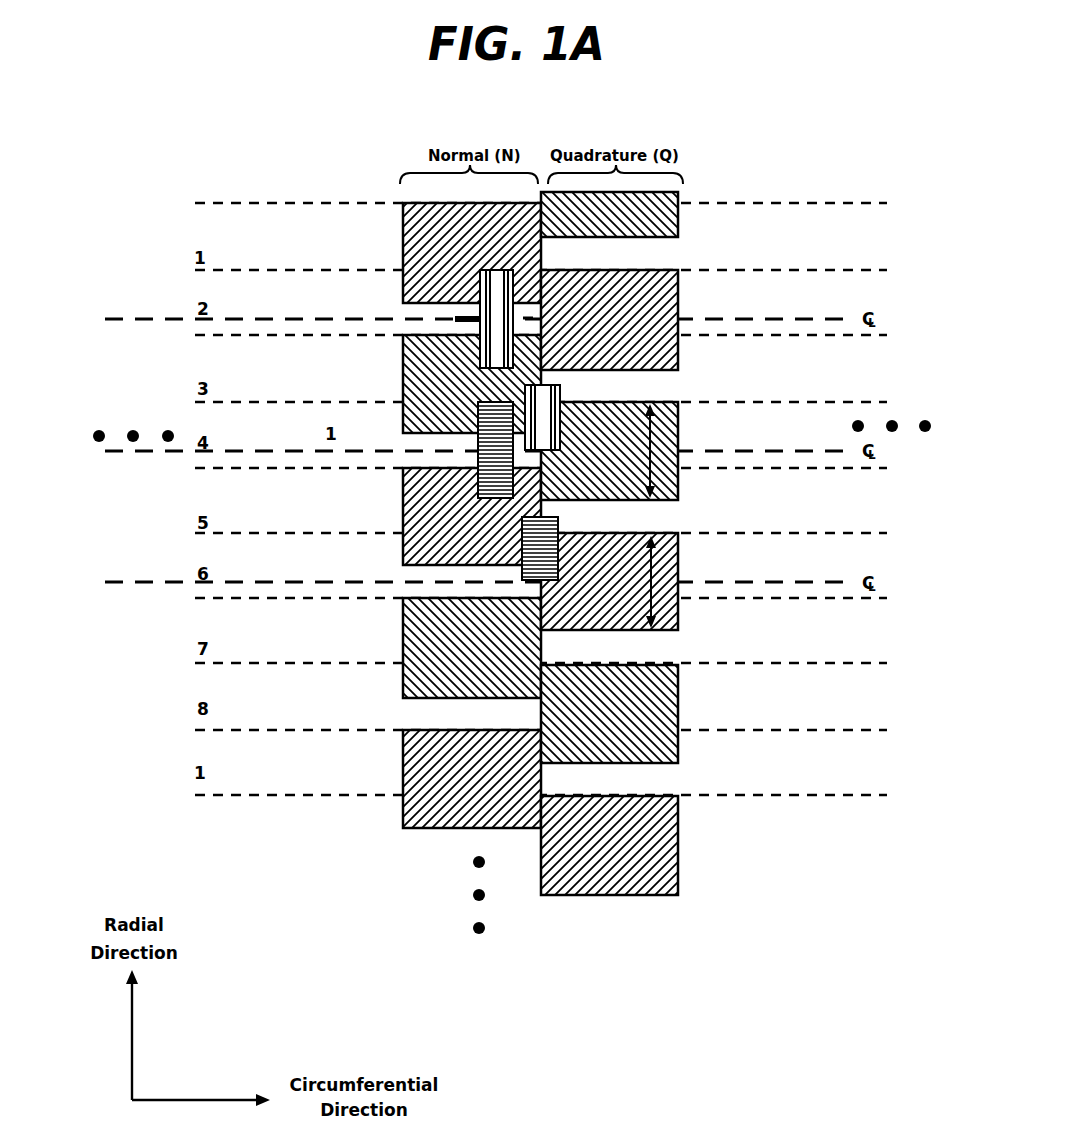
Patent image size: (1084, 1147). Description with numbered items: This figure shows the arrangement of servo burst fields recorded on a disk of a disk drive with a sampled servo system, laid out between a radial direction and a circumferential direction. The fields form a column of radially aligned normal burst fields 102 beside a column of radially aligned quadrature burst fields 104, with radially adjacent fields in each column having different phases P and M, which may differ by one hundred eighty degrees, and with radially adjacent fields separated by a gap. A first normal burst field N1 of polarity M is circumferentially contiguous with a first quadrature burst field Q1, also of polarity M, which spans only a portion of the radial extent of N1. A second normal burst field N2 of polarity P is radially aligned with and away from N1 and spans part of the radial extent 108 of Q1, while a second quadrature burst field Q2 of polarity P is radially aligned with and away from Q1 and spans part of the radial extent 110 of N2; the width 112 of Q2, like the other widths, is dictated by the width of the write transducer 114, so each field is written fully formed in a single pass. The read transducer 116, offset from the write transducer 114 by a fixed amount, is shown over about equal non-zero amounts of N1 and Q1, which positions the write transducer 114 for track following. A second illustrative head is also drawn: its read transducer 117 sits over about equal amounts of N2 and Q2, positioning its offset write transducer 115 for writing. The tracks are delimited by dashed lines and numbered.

The normal burst fields 102 is at (422, 150).
The quadrature burst fields 104 is at (686, 150).
The radial extent of the first quadrature burst field 108 is at (678, 428).
The radial extent of the second normal burst field 110 is at (489, 546).
The width of the second quadrature burst field 112 is at (678, 593).
The write transducer 114 is at (480, 296).
The offset write transducer 115 is at (478, 460).
The read transducer 116 is at (560, 391).
The read transducer 117 is at (558, 531).
The first normal burst field N1 is at (403, 360).
The second normal burst field N2 is at (403, 510).
The first quadrature burst field Q1 is at (678, 489).
The second quadrature burst field Q2 is at (678, 545).